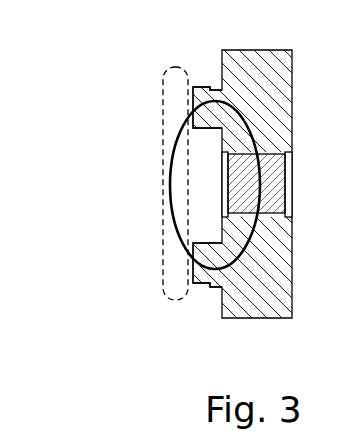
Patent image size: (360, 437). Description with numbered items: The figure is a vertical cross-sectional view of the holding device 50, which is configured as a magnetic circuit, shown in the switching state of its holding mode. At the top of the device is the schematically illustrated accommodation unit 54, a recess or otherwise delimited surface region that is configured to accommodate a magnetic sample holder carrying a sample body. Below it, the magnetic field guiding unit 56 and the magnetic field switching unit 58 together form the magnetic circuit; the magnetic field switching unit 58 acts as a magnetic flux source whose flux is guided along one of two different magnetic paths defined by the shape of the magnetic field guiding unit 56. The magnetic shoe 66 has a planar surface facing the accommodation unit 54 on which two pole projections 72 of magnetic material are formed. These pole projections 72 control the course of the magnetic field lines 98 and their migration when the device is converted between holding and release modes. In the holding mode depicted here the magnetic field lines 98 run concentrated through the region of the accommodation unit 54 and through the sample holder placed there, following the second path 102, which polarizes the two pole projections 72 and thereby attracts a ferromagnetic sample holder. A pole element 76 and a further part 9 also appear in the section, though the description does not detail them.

The holding device 50 is at (112, 145).
The accommodation unit 54 is at (137, 205).
The magnetic field guiding unit 56 is at (208, 58).
The magnetic field switching unit 58 is at (277, 162).
The magnetic shoe 66 is at (281, 260).
The pole projections 72 is at (165, 98).
The pole plate 76 is at (281, 190).
The magnetic field lines 98 is at (166, 170).
The second path 102 is at (170, 227).
The partial numeral 9 is at (354, 202).